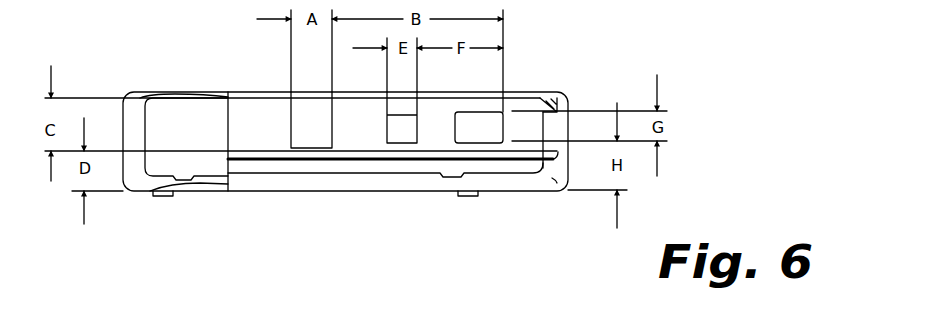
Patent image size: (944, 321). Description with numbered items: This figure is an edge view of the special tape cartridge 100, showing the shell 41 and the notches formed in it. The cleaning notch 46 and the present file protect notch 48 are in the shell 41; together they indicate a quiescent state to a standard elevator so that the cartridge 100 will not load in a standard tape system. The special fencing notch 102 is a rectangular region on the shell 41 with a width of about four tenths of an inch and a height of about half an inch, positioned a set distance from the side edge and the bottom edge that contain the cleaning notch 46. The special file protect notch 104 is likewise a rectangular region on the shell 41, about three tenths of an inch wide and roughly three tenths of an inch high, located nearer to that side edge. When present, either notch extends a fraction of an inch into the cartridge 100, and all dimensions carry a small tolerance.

The special tape cartridge 100 is at (210, 64).
The shell 41 is at (233, 191).
The special fencing notch 102 is at (318, 135).
The special file protect notch 104 is at (403, 135).
The present file protect notch 48 is at (488, 130).
The cleaning notch 46 is at (557, 183).